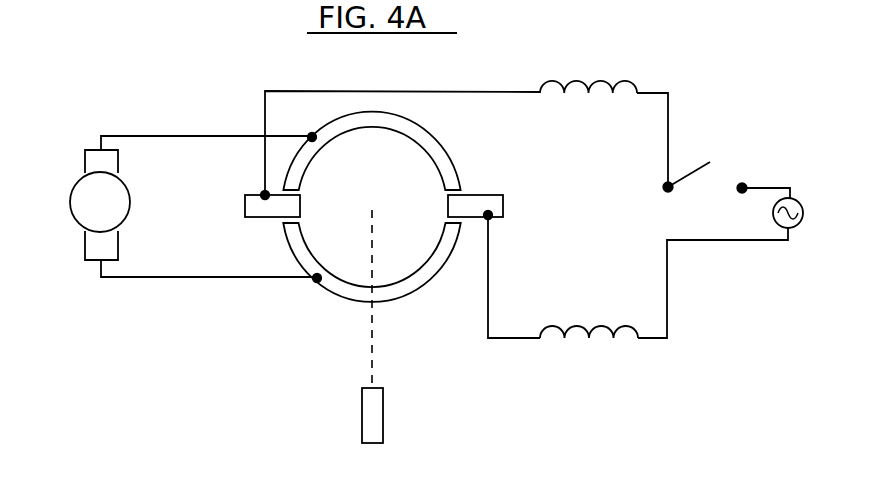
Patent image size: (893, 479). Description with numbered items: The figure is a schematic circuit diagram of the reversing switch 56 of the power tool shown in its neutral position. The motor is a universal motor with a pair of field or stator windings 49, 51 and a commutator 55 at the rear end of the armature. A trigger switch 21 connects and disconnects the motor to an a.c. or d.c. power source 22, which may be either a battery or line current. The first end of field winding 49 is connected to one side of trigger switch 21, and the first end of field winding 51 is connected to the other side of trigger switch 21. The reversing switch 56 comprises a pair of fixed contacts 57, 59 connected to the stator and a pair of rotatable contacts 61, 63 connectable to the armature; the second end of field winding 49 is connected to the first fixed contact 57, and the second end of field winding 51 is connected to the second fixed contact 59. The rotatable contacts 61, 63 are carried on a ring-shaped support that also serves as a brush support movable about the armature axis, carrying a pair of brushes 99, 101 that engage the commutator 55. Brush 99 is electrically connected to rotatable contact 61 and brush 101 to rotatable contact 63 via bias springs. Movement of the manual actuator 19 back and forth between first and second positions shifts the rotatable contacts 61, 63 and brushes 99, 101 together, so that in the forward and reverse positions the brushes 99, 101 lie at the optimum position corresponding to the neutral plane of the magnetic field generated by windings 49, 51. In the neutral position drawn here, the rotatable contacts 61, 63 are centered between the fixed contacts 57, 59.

The manual actuator 19 is at (373, 415).
The trigger switch 21 is at (722, 167).
The power source 22 is at (802, 202).
The field winding 49 is at (590, 80).
The field winding 51 is at (563, 327).
The commutator 55 is at (88, 198).
The reversing switch 56 is at (372, 189).
The first fixed contact 57 is at (245, 208).
The second fixed contact 59 is at (490, 205).
The rotatable contact 61 is at (435, 148).
The rotatable contact 63 is at (422, 277).
The brush 99 is at (93, 162).
The brush 101 is at (95, 245).